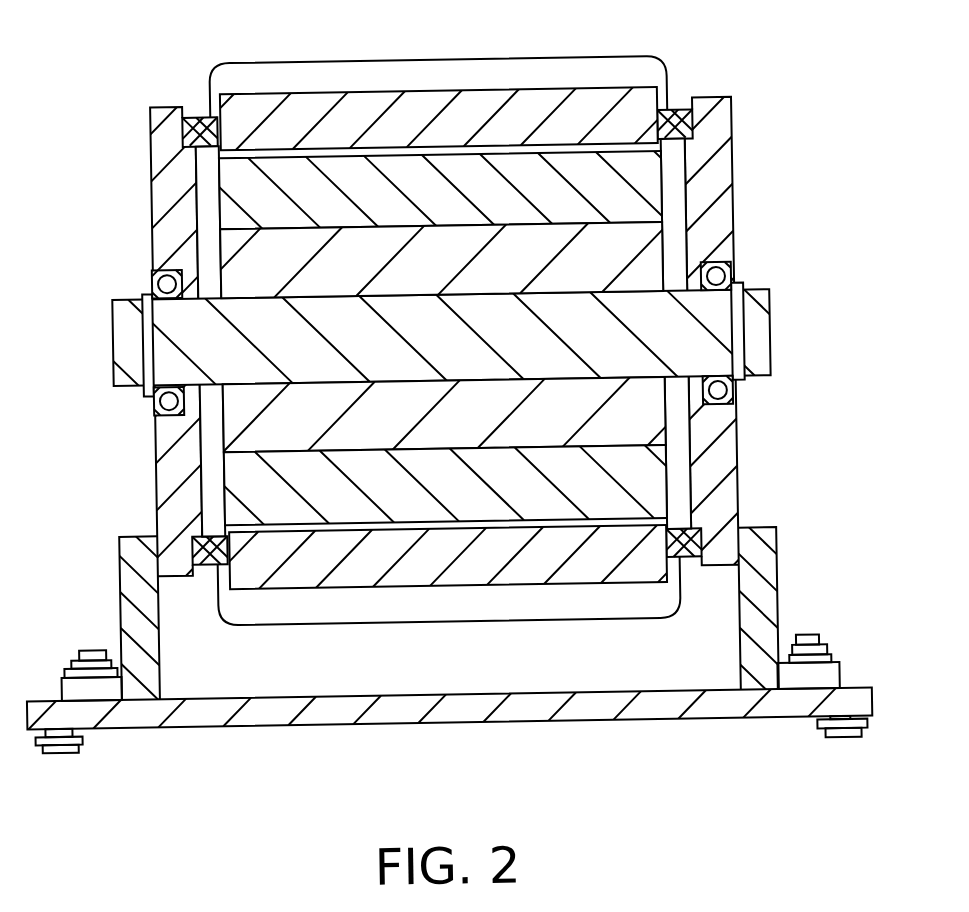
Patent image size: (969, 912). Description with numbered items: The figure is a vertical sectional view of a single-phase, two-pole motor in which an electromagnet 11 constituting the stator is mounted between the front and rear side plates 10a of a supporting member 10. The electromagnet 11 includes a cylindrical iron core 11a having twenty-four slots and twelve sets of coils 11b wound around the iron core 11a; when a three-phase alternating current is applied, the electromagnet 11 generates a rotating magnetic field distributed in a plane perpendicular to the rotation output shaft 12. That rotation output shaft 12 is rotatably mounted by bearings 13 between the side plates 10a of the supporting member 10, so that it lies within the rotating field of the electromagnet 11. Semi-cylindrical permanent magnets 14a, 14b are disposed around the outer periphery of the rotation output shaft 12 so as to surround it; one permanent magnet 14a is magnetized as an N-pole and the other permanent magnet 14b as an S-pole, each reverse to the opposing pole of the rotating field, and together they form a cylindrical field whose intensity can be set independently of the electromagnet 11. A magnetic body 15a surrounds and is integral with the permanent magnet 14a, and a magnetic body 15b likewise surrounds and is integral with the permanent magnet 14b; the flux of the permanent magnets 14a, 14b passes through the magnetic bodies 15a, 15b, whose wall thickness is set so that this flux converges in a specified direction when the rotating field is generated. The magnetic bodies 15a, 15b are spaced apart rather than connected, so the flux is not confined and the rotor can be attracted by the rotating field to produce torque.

The supporting member 10 is at (150, 119).
The side plates 10a is at (168, 185).
The electromagnet 11 is at (447, 401).
The iron core 11a is at (580, 112).
The coils 11b is at (501, 62).
The rotation output shaft 12 is at (761, 347).
The bearings 13 is at (152, 282).
The permanent magnet 14a is at (647, 265).
The permanent magnet 14b is at (641, 435).
The magnetic body 15a is at (628, 207).
The magnetic body 15b is at (637, 486).